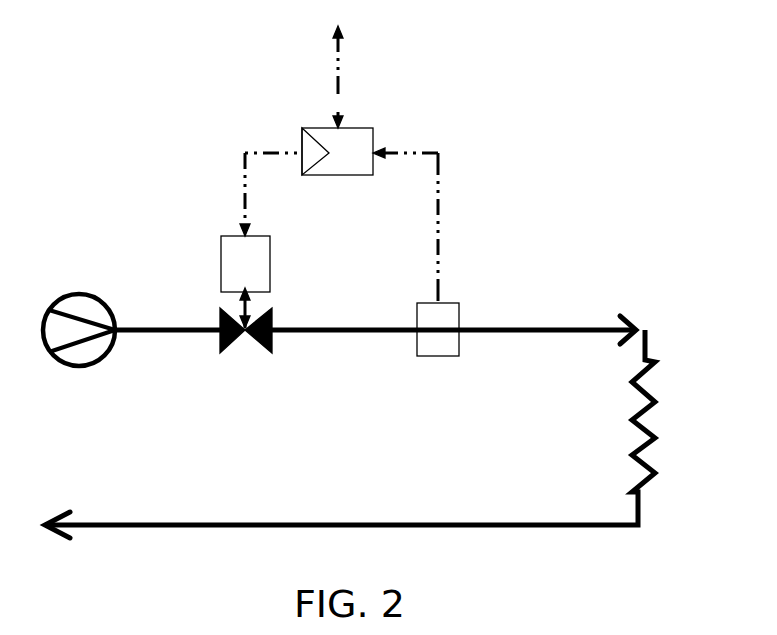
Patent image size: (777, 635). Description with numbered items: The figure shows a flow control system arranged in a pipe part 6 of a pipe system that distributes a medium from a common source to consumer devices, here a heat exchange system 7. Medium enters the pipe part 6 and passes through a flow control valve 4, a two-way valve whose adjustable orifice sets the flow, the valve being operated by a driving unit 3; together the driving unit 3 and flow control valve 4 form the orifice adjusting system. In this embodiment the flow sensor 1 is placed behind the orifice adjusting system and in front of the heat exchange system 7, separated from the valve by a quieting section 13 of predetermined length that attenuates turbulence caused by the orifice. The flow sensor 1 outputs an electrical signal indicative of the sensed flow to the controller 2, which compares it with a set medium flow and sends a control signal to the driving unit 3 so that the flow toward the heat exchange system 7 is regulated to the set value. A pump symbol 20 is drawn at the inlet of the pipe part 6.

The flow sensor 1 is at (438, 254).
The controller 2 is at (341, 100).
The driving unit 3 is at (245, 222).
The flow control valve 4 is at (246, 333).
The pipe part 6 is at (153, 330).
The heat exchange system 7 is at (645, 417).
The quieting section 13 is at (340, 332).
The pump 20 is at (79, 330).